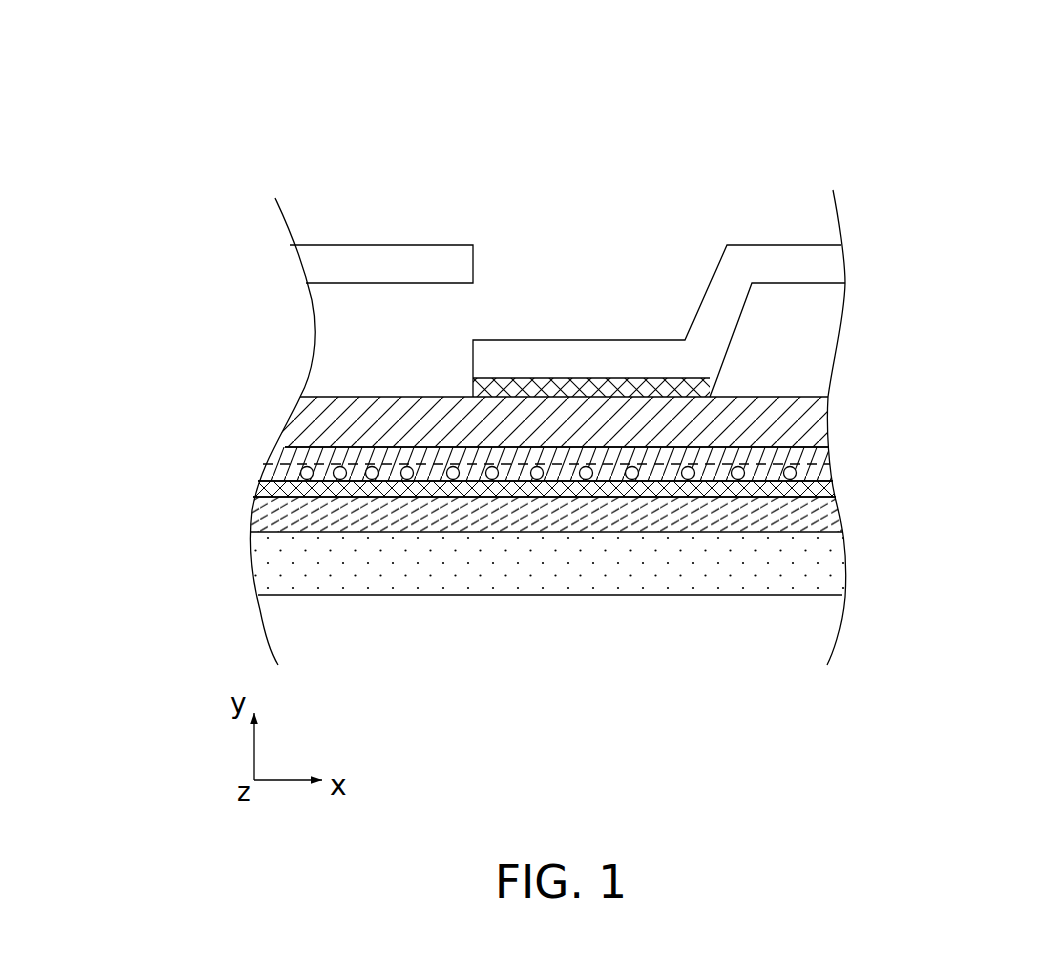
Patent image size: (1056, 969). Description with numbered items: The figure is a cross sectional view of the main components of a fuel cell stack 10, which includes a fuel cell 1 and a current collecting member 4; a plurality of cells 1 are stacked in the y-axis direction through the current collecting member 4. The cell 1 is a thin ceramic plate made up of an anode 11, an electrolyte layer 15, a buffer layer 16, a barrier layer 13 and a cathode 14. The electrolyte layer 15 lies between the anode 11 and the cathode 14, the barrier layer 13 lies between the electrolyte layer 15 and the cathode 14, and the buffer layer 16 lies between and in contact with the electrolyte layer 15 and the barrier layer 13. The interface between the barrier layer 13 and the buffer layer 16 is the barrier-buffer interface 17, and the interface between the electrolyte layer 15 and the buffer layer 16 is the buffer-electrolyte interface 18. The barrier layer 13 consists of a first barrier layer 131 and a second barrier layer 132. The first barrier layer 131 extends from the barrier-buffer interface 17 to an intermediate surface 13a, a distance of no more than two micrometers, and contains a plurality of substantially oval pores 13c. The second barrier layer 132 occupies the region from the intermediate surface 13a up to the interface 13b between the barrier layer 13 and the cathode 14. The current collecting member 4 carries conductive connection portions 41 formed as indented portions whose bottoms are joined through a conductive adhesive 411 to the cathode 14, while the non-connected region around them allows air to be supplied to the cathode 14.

The fuel cell 1 is at (985, 363).
The fuel cell stack 10 is at (318, 115).
The current collecting member 4 is at (602, 268).
The conductive connection portion 41 is at (694, 301).
The conductive adhesive 411 is at (710, 388).
The cathode 14 is at (328, 408).
The barrier layer 13 is at (516, 426).
The intermediate surface 13a is at (833, 460).
The interface between the barrier layer and the cathode 13b is at (833, 445).
The pores 13c is at (338, 466).
The first barrier layer 131 is at (258, 472).
The second barrier layer 132 is at (262, 457).
The buffer layer 16 is at (529, 487).
The barrier-buffer interface 17 is at (830, 478).
The buffer-electrolyte interface 18 is at (840, 493).
The electrolyte layer 15 is at (258, 517).
The anode 11 is at (260, 575).